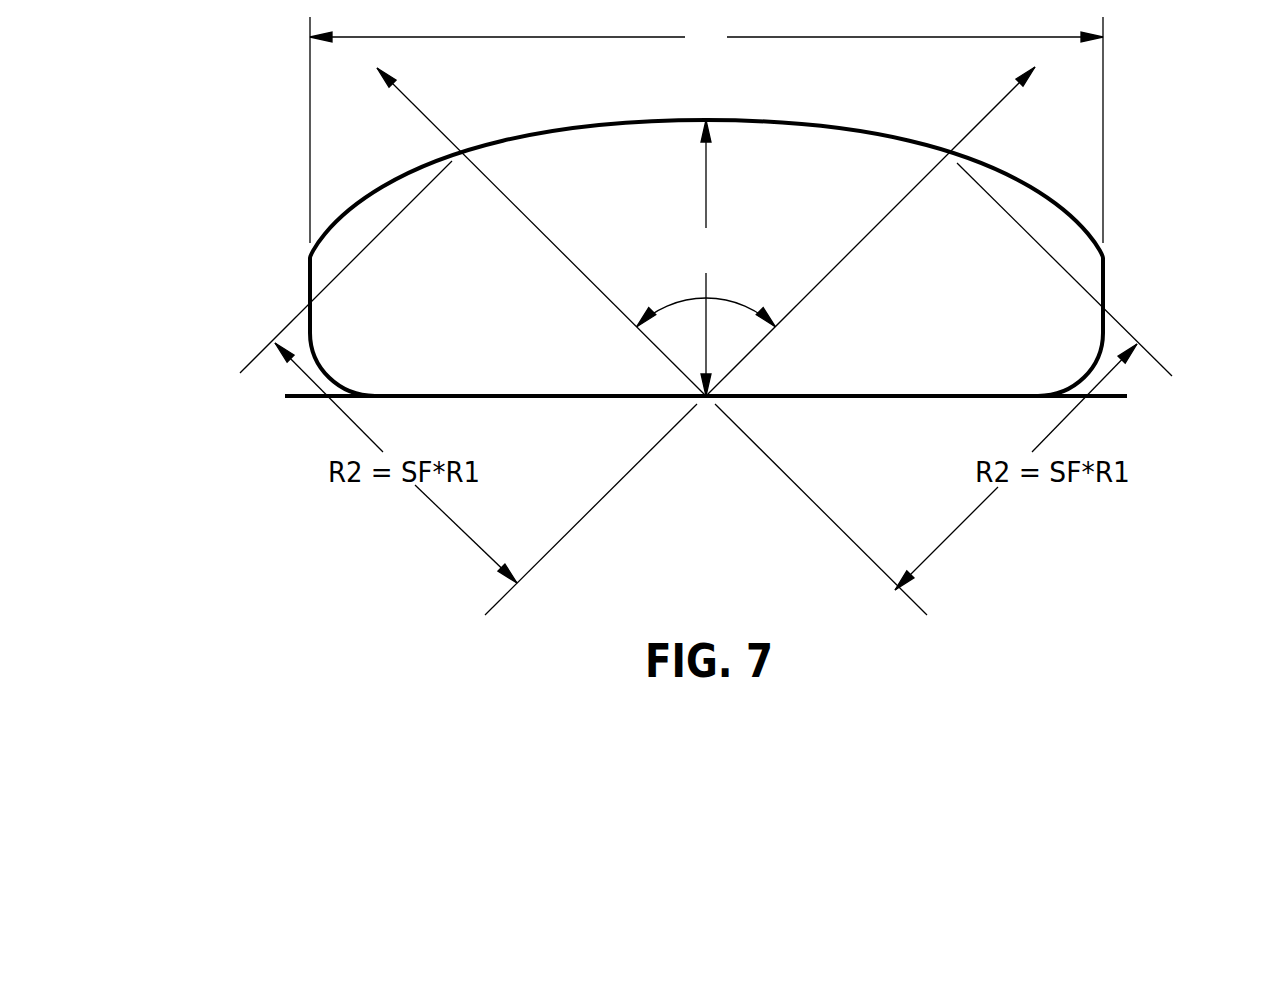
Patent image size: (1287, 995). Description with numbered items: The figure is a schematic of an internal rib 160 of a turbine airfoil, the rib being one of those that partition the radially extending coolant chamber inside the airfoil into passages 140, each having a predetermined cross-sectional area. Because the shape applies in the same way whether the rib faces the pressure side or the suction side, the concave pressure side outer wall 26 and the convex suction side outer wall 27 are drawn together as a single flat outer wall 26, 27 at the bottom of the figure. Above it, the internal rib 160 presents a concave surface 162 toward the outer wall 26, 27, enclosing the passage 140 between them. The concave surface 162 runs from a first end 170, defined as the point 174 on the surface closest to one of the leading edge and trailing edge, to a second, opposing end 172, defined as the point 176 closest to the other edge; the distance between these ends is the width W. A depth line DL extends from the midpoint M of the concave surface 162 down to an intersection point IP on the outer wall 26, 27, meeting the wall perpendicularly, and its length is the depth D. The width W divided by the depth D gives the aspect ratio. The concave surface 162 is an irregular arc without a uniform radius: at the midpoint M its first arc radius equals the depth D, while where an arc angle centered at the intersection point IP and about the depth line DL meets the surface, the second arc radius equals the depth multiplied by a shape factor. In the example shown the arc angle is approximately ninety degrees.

The passage 140 is at (497, 284).
The internal rib 160 is at (557, 126).
The concave surface 162 is at (588, 128).
The first end 170 is at (311, 258).
The point 174 is at (265, 296).
The second, opposing end 172 is at (1103, 264).
The point 176 is at (1146, 301).
The concave pressure side outer wall 26 is at (825, 398).
The convex suction side outer wall 27 is at (706, 427).
The width W is at (706, 130).
The depth D is at (712, 258).
The midpoint M is at (707, 118).
The depth line DL is at (707, 180).
The intersection point IP is at (706, 400).